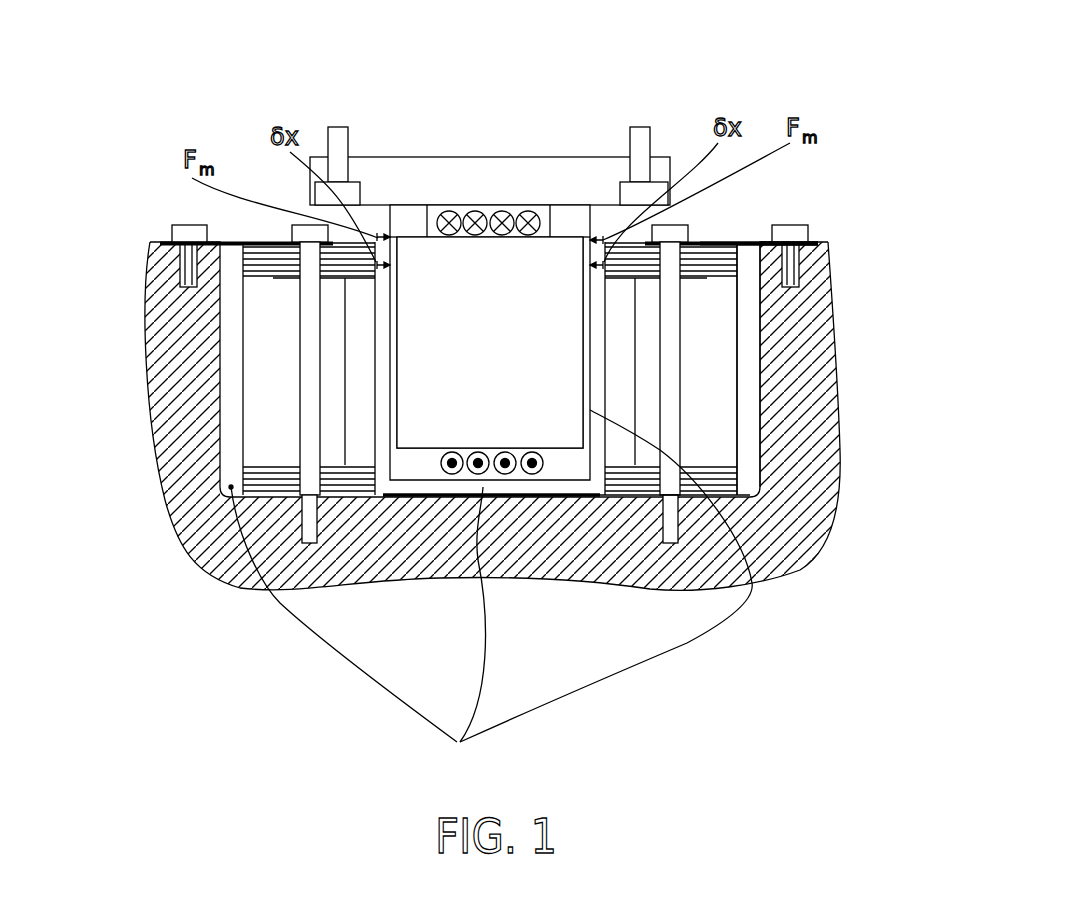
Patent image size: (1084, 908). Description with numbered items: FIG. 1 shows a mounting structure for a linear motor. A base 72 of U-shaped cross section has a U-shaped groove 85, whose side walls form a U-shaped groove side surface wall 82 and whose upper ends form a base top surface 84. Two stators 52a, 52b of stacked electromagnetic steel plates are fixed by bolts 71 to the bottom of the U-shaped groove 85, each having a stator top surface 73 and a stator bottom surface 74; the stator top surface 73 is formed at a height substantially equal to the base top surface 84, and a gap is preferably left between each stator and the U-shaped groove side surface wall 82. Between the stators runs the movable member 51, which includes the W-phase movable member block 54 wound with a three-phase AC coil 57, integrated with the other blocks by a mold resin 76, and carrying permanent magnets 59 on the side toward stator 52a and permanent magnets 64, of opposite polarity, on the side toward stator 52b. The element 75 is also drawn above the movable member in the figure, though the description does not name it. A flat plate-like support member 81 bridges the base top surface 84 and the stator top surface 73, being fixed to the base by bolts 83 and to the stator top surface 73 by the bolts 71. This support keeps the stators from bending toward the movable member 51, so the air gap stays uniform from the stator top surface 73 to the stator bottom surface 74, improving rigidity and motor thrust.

The movable member 51 is at (430, 481).
The stator 52a is at (720, 447).
The stator 52b is at (272, 310).
The movable member block 54 is at (545, 325).
The three-phase AC coil 57 is at (490, 210).
The permanent magnet 59 is at (747, 477).
The permanent magnet 64 is at (392, 410).
The bolt 71 is at (665, 228).
The base 72 is at (718, 447).
The stator top surface 73 is at (598, 243).
The stator bottom surface 74 is at (621, 505).
The top plate 75 is at (425, 178).
The mold resin 76 is at (573, 467).
The plate-like support member 81 is at (746, 238).
The U-shaped groove side surface wall 82 is at (172, 380).
The bolt 83 is at (820, 241).
The base top surface 84 is at (172, 240).
The U-shaped groove 85 is at (490, 592).